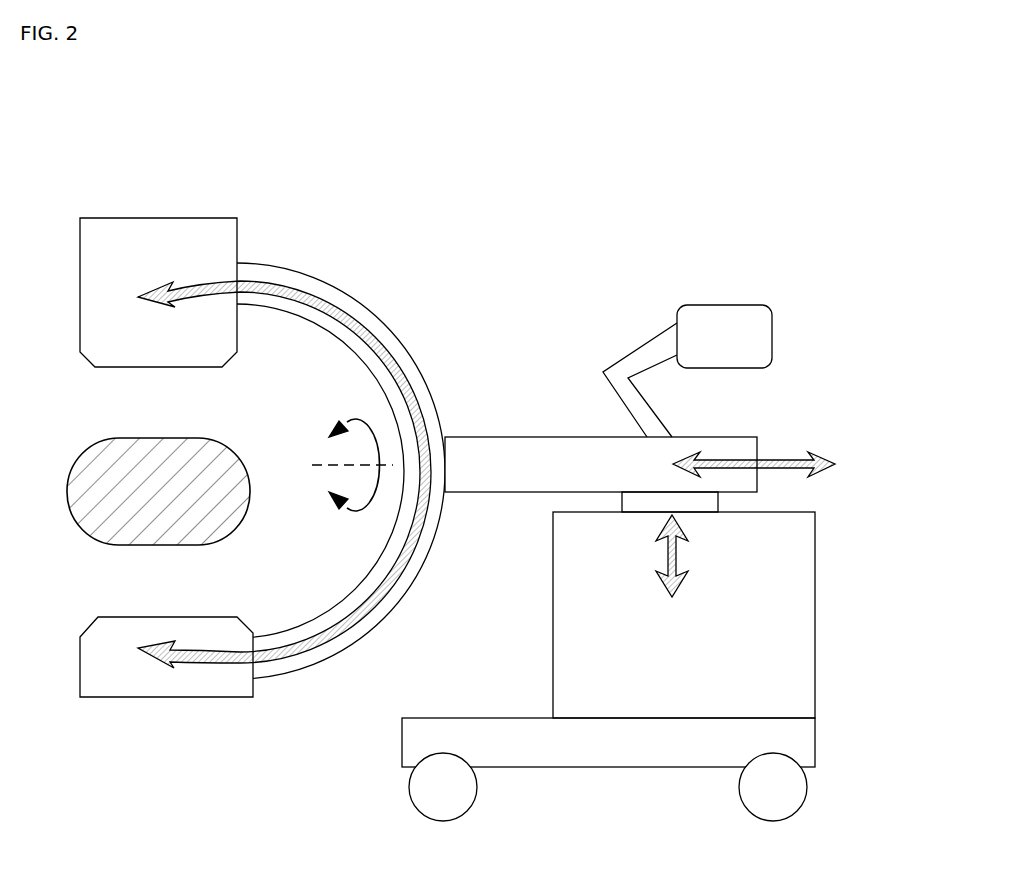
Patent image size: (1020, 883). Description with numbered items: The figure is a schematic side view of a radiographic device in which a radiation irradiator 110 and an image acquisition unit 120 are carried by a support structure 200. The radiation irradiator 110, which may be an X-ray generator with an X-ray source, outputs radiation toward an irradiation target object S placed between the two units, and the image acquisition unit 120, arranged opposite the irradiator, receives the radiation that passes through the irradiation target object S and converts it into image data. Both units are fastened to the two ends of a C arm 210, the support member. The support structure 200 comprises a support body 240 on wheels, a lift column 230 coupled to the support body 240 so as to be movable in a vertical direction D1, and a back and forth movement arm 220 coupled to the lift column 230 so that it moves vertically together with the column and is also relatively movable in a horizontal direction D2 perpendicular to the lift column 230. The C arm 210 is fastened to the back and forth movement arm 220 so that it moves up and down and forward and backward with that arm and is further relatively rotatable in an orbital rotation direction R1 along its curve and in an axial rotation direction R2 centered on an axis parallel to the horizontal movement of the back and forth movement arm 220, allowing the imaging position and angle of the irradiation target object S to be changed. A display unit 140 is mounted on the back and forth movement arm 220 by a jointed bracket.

The radiation irradiator 110 is at (110, 698).
The image acquisition unit 120 is at (185, 218).
The display unit 140 is at (772, 336).
The support structure 200 is at (561, 282).
The C arm 210 is at (305, 273).
The back and forth movement arm 220 is at (502, 437).
The lift column 230 is at (716, 503).
The support body 240 is at (815, 667).
The orbital rotation direction R1 is at (348, 325).
The axial rotation direction R2 is at (350, 418).
The vertical direction D1 is at (680, 558).
The horizontal direction D2 is at (781, 460).
The irradiation target object S is at (97, 442).